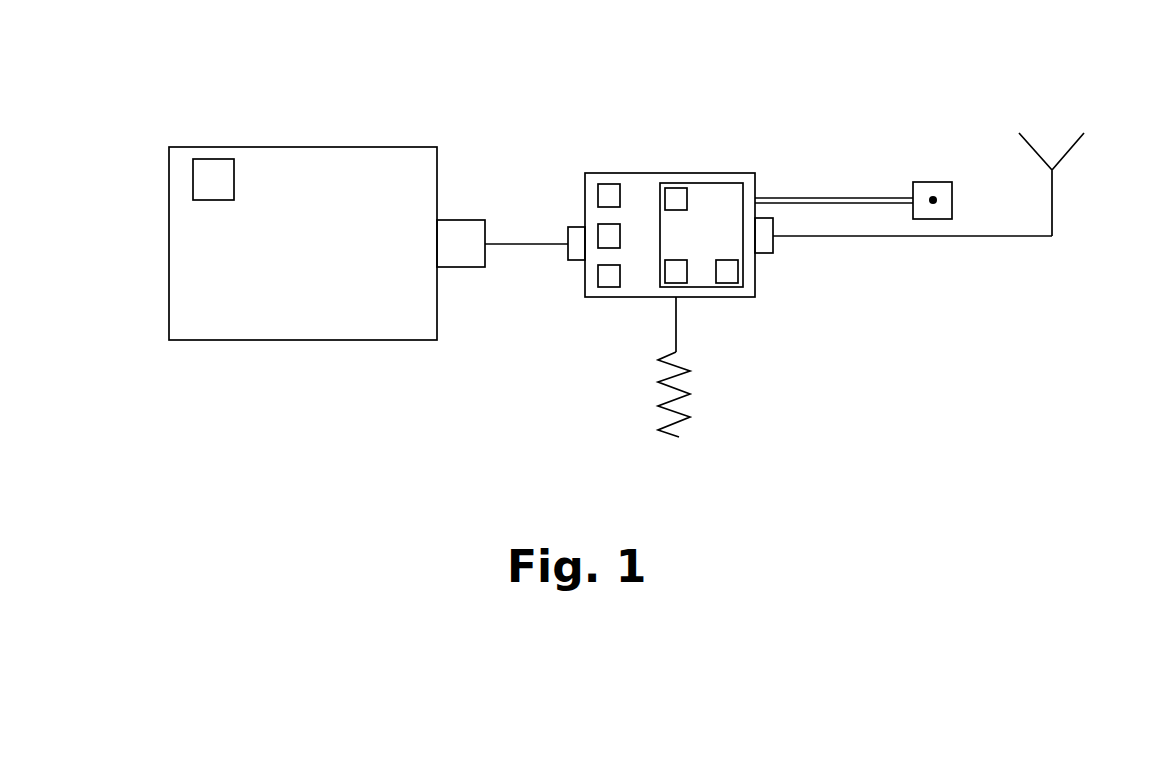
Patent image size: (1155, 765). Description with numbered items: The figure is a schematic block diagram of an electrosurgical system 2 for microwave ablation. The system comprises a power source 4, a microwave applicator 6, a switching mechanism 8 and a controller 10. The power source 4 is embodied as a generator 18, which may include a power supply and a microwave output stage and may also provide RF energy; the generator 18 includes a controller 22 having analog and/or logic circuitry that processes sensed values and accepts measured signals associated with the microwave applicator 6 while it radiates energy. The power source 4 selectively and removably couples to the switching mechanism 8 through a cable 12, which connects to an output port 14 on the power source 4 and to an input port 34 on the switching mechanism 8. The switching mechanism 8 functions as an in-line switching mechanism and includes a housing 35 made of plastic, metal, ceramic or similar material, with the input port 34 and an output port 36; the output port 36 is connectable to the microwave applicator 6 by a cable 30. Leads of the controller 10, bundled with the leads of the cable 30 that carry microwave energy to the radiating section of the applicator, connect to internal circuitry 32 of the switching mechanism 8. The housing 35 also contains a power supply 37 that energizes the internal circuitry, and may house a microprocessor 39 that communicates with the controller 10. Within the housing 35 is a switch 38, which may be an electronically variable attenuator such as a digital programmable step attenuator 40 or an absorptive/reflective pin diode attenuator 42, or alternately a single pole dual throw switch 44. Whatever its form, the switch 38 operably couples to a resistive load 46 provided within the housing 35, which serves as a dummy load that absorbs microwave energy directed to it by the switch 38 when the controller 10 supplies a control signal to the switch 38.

The electrosurgical system 2 is at (259, 58).
The power source 4 is at (346, 136).
The controller 22 is at (202, 159).
The generator 18 is at (318, 257).
The output port 14 is at (455, 220).
The cable 12 is at (510, 244).
The input port 34 is at (576, 227).
The switching mechanism 8 is at (641, 169).
The internal circuitry 32 is at (612, 184).
The power supply 37 is at (598, 237).
The microprocessor 39 is at (604, 297).
The housing 35 is at (706, 173).
The switch 38 is at (727, 183).
The digital programmable step attenuator 40 is at (675, 188).
The single pole dual throw switch 44 is at (680, 284).
The absorptive/reflective pin diode attenuator 42 is at (733, 284).
The resistive load 46 is at (680, 438).
The output port 36 is at (763, 253).
The controller 10 is at (939, 167).
The cable 30 is at (987, 237).
The microwave applicator 6 is at (1052, 205).